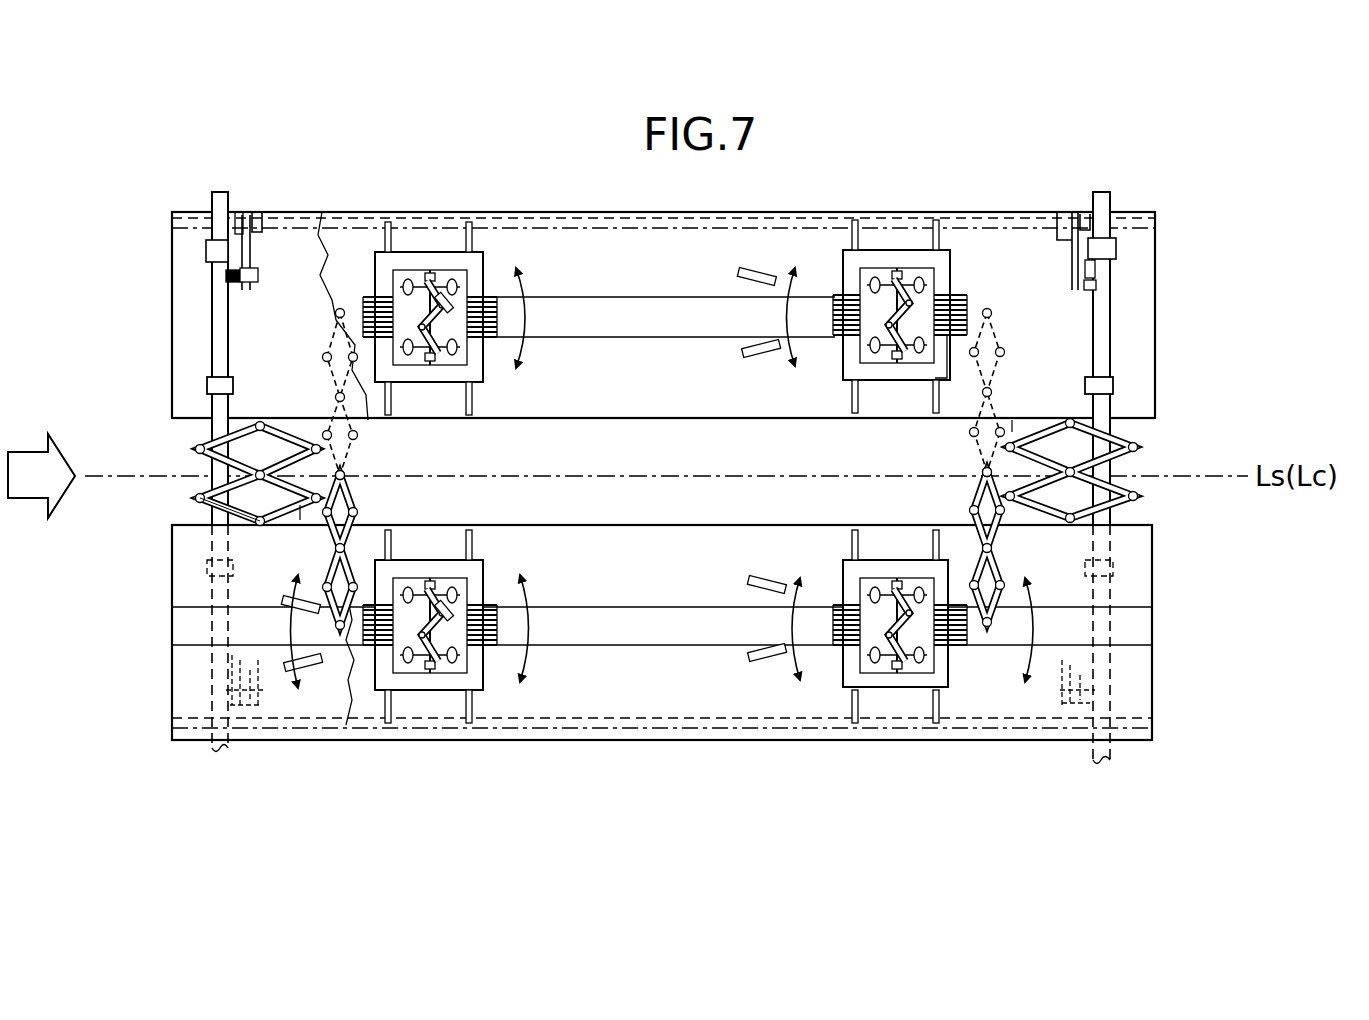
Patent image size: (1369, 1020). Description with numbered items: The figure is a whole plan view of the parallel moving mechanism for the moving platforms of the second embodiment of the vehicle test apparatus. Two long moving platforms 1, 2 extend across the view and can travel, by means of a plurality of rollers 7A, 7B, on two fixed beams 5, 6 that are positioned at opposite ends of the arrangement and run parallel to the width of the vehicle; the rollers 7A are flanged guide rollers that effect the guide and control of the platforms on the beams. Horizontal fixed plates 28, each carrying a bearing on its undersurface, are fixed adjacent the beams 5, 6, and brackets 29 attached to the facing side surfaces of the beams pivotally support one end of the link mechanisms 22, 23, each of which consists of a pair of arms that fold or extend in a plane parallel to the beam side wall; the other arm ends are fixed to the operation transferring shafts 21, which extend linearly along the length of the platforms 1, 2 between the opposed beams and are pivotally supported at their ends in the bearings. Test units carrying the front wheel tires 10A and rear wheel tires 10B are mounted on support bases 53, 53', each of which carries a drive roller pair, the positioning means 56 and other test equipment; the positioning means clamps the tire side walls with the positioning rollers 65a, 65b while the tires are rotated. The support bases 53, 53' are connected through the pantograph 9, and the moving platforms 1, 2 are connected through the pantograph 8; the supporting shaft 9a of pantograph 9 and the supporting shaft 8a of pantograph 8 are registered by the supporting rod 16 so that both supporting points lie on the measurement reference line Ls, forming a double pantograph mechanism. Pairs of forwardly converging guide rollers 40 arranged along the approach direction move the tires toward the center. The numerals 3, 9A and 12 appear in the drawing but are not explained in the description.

The moving platform 1 is at (206, 212).
The moving platform 2 is at (182, 740).
The support posts 3 is at (388, 224).
The fixed beam 5 is at (220, 196).
The fixed beam 6 is at (1102, 196).
The flanged guide roller 7A is at (212, 245).
The roller 7B is at (207, 386).
The pantograph 8 is at (204, 484).
The supporting shaft 8a is at (1120, 486).
The pantograph 9 is at (360, 500).
The supporting shaft 9a is at (355, 472).
The pivot 9A is at (980, 470).
The front wheel tire 10A is at (960, 290).
The rear wheel tire 10B is at (527, 626).
The swing direction 12 is at (315, 640).
The supporting rod 16 is at (298, 506).
The operation transferring shaft 21 is at (978, 216).
The link mechanism 22 is at (258, 268).
The link mechanism 23 is at (1060, 267).
The horizontal fixed plate 28 is at (256, 215).
The bracket 29 is at (226, 276).
The guide roller 40 is at (742, 350).
The support base 53 is at (666, 257).
The support base 53' is at (663, 580).
The positioning means 56 is at (465, 372).
The positioning roller 65a is at (440, 306).
The positioning roller 65b is at (442, 690).